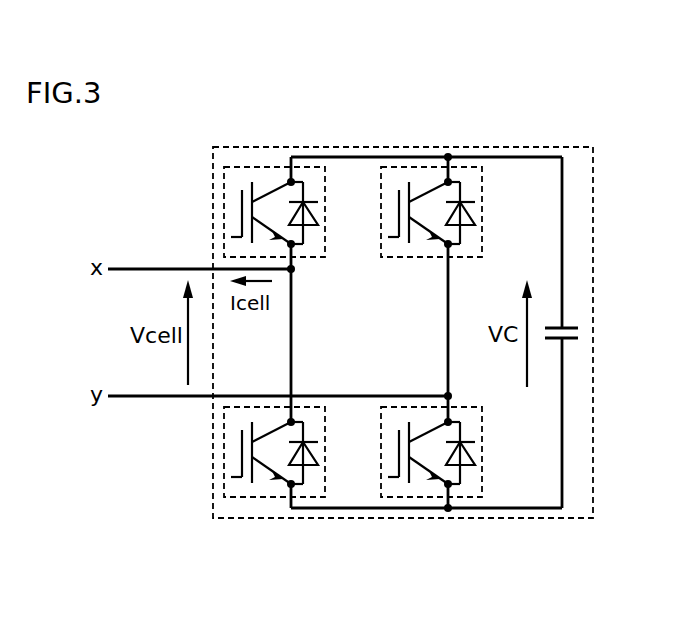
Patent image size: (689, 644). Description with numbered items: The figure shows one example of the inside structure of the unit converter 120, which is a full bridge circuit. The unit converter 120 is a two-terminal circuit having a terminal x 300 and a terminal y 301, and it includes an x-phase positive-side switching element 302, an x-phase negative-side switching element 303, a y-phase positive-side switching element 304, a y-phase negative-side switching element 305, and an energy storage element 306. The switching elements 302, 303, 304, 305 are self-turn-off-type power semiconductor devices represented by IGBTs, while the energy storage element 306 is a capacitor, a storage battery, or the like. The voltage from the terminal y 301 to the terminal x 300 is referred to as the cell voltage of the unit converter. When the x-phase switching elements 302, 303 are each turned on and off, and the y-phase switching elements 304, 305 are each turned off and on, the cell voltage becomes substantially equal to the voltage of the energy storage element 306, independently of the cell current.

The unit converter 120 is at (302, 147).
The terminal x 300 is at (125, 266).
The terminal y 301 is at (126, 400).
The x-phase positive-side switching element 302 is at (298, 263).
The x-phase negative-side switching element 303 is at (327, 448).
The y-phase positive-side switching element 304 is at (456, 260).
The y-phase negative-side switching element 305 is at (457, 407).
The energy storage element 306 is at (549, 326).